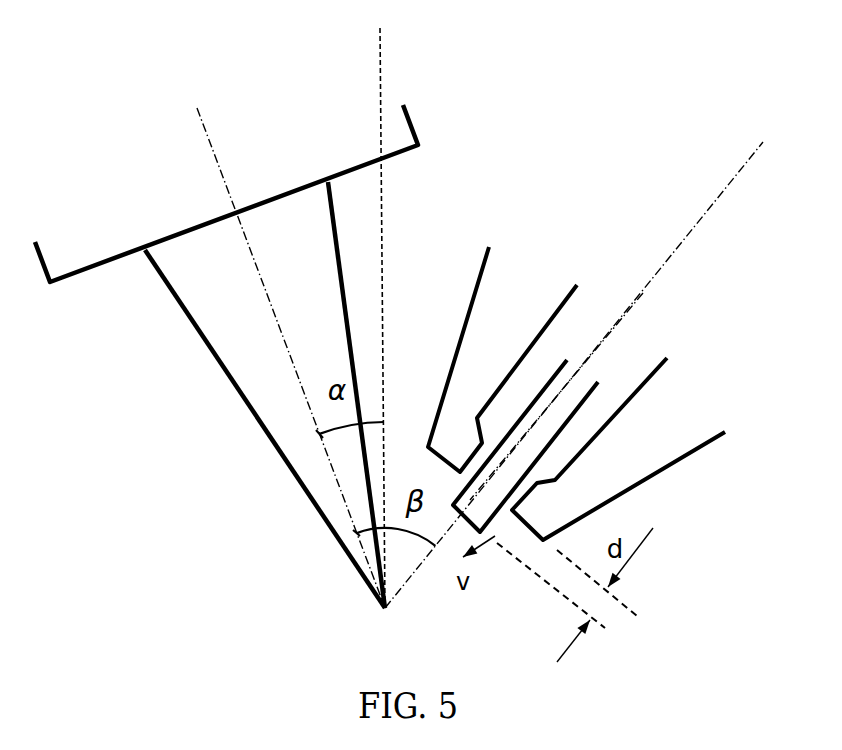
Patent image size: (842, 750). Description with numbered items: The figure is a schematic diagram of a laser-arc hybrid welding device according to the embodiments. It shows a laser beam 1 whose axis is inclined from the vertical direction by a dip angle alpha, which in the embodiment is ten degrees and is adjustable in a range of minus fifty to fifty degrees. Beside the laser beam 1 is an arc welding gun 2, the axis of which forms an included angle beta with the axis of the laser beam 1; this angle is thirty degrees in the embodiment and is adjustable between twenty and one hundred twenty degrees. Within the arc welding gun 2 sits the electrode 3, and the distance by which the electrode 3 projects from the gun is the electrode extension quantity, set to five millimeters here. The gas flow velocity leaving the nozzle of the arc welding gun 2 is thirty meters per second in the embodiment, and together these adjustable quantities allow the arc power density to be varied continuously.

The laser beam 1 is at (252, 364).
The arc welding gun 2 is at (694, 409).
The electrode 3 is at (562, 396).